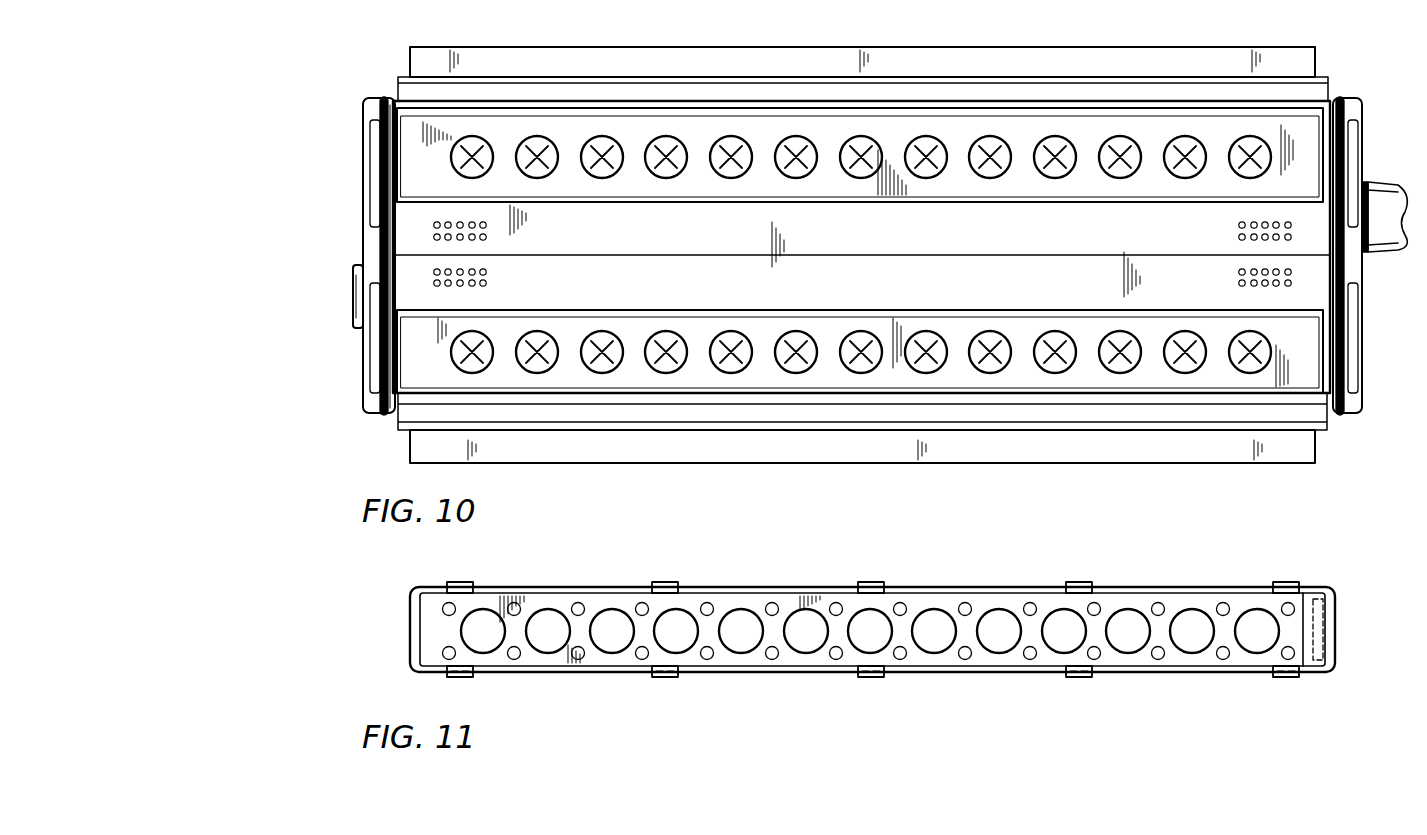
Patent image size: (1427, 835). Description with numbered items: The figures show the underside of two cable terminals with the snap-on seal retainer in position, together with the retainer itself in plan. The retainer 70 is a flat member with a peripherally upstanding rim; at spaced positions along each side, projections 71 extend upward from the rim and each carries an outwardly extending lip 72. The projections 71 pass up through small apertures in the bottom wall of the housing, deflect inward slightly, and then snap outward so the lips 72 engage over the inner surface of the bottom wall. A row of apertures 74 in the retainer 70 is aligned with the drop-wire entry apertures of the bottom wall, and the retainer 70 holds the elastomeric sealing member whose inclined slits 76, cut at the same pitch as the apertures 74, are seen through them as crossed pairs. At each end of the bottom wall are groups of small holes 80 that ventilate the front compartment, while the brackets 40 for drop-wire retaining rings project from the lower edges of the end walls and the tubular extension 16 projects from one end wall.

In FIG. 10, the tubular extension 16 is at (353, 300).
In FIG. 10, the bracket 40 is at (372, 108).
In FIG. 10, the retainer 70 is at (698, 160).
In FIG. 11, the retainer 70 is at (820, 608).
In FIG. 11, the projection 71 is at (886, 586).
In FIG. 11, the lip 72 is at (672, 583).
In FIG. 10, the aperture 74 is at (665, 138).
In FIG. 11, the aperture 74 is at (483, 640).
In FIG. 10, the inclined slit 76 is at (857, 140).
In FIG. 10, the small holes 80 is at (458, 290).